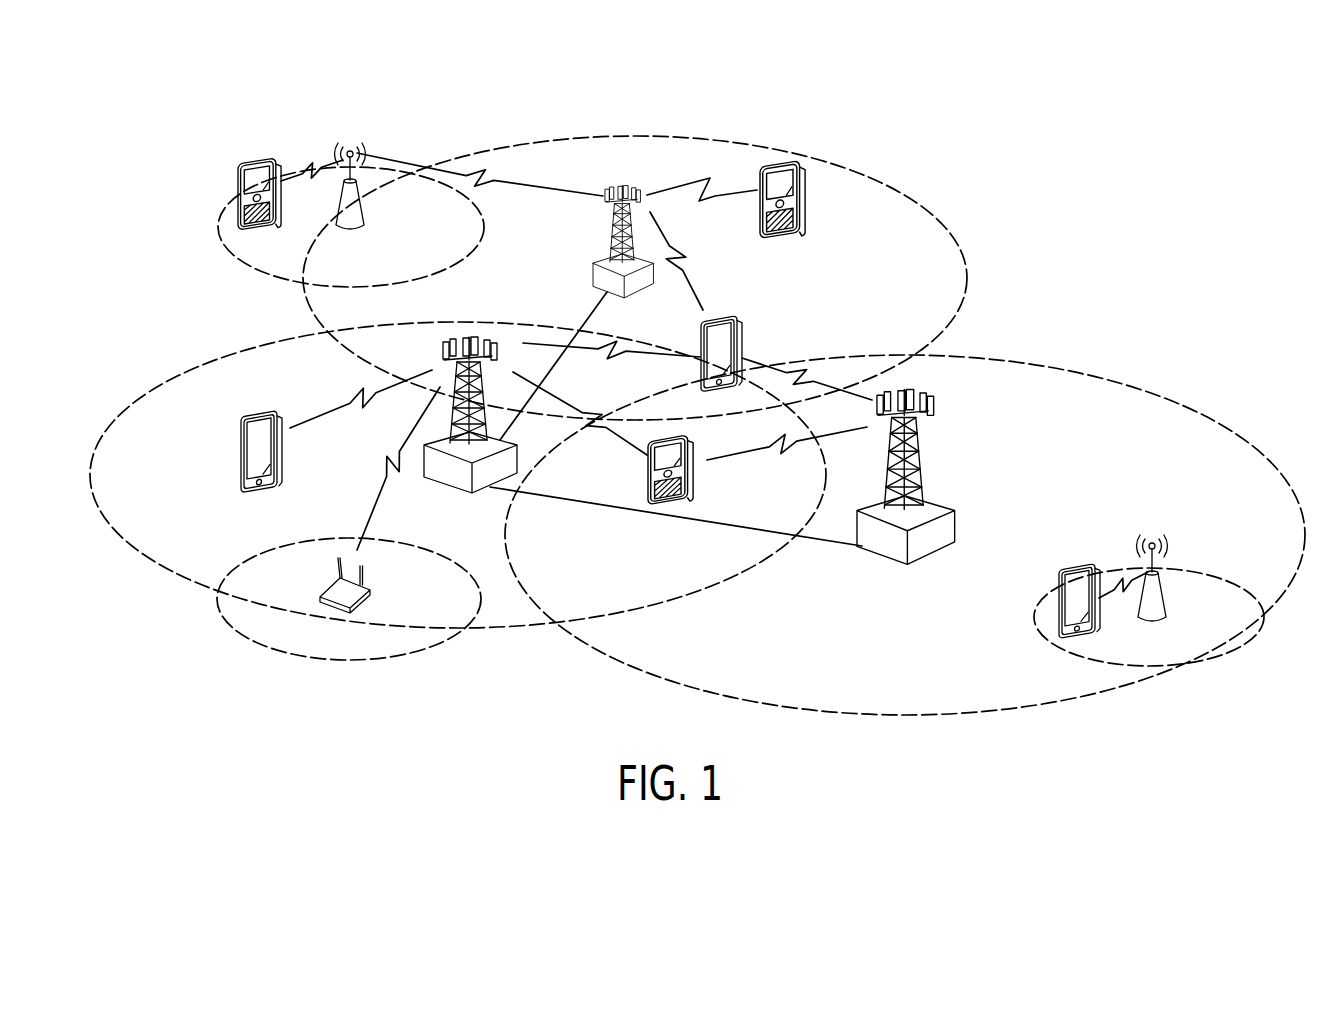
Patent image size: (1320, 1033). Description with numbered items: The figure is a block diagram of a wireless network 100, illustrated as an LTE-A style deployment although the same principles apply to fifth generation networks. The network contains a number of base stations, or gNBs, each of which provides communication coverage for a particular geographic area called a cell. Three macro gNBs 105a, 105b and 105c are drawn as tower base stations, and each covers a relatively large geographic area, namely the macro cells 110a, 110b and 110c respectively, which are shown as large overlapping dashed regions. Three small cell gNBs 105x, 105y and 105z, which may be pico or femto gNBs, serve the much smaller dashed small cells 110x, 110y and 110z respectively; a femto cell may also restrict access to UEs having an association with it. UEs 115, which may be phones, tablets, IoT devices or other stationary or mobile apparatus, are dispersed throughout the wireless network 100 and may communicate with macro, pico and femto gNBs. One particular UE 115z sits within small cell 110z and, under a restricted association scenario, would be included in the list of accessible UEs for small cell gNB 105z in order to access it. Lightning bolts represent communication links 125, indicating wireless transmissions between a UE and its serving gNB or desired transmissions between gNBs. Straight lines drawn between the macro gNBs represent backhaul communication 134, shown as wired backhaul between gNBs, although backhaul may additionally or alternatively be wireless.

The wireless network 100 is at (1042, 211).
The macro gNB 105a is at (473, 490).
The macro gNB 105b is at (593, 278).
The macro gNB 105c is at (936, 562).
The small cell gNB 105x is at (372, 600).
The small cell gNB 105y is at (369, 226).
The small cell gNB 105z is at (1170, 600).
The macro cell 110a is at (187, 370).
The macro cell 110b is at (783, 155).
The macro cell 110c is at (1097, 380).
The small cell 110x is at (283, 652).
The small cell 110y is at (244, 264).
The small cell 110z is at (1227, 658).
The UE 115 is at (238, 183).
The UE 115z is at (1059, 579).
The communication links 125 is at (318, 172).
The backhaul communication 134 is at (593, 321).